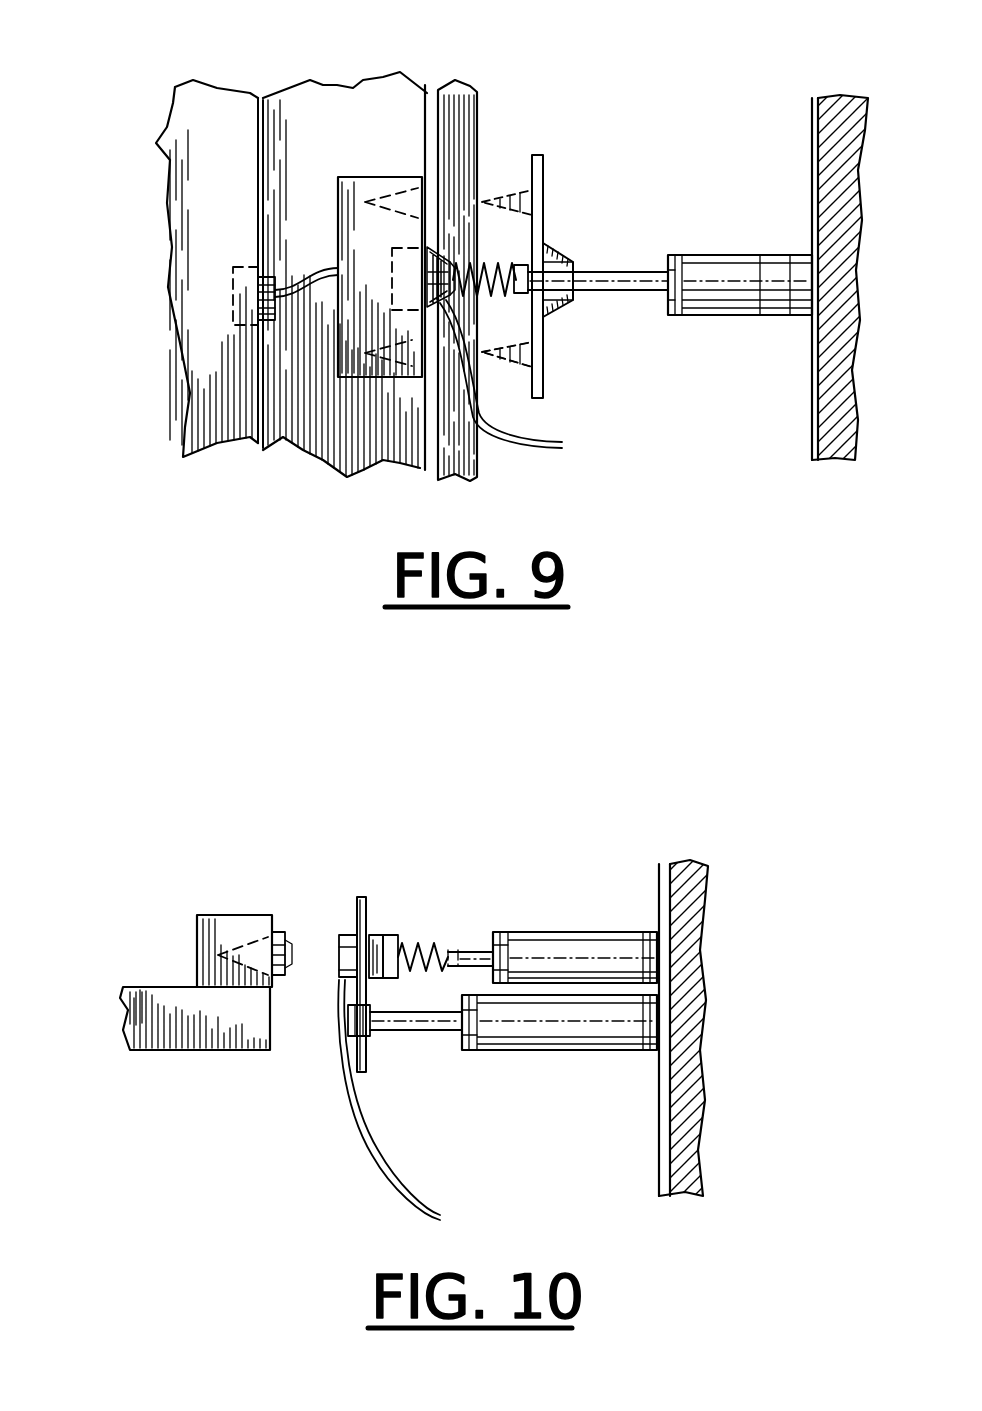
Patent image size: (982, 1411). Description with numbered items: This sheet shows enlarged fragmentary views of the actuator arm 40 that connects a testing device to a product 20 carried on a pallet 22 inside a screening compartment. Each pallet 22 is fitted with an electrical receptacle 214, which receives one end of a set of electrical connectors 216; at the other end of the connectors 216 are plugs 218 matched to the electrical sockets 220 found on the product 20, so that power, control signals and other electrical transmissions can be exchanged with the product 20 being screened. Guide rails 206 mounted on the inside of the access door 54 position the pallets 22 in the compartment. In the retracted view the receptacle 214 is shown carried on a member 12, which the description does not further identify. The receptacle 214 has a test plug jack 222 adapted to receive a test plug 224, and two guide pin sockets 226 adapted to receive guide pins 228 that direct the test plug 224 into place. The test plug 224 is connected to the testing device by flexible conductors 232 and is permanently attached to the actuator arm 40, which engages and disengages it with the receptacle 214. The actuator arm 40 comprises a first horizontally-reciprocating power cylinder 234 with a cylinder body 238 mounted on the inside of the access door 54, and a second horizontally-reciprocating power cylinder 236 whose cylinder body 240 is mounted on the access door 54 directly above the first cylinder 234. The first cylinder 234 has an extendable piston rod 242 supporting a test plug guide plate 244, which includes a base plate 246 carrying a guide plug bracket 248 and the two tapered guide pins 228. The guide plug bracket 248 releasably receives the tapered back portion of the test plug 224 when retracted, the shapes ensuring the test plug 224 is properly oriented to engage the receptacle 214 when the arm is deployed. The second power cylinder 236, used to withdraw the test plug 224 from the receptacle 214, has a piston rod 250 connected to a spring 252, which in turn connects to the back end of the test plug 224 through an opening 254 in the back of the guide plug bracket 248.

In FIG. 10, the door 12 is at (157, 987).
In FIG. 9, the product 20 is at (175, 88).
In FIG. 9, the pallet 22 is at (333, 80).
In FIG. 9, the actuator arm 40 is at (783, 232).
In FIG. 10, the actuator arm 40 is at (520, 896).
In FIG. 9, the access door 54 is at (812, 125).
In FIG. 10, the access door 54 is at (656, 876).
In FIG. 9, the guide rail 206 is at (415, 185).
In FIG. 9, the electrical receptacle 214 is at (365, 177).
In FIG. 10, the electrical receptacle 214 is at (208, 915).
In FIG. 9, the electrical connector 216 is at (312, 272).
In FIG. 9, the plug 218 is at (266, 276).
In FIG. 9, the electrical socket 220 is at (236, 270).
In FIG. 9, the test plug jack 222 is at (430, 248).
In FIG. 10, the test plug jack 222 is at (288, 972).
In FIG. 9, the test plug 224 is at (452, 268).
In FIG. 10, the test plug 224 is at (337, 924).
In FIG. 9, the guide pin socket 226 is at (432, 255).
In FIG. 10, the guide pin socket 226 is at (282, 935).
In FIG. 9, the guide pin 228 is at (517, 368).
In FIG. 9, the flexible conductor 232 is at (535, 450).
In FIG. 10, the flexible conductor 232 is at (338, 1118).
In FIG. 10, the first horizontally-reciprocating power cylinder 234 is at (512, 1065).
In FIG. 9, the second horizontally-reciprocating power cylinder 236 is at (688, 250).
In FIG. 10, the second horizontally-reciprocating power cylinder 236 is at (541, 916).
In FIG. 10, the cylinder body 238 is at (632, 1050).
In FIG. 9, the cylinder body 240 is at (757, 255).
In FIG. 10, the cylinder body 240 is at (639, 931).
In FIG. 10, the extendable piston rod 242 is at (417, 1033).
In FIG. 9, the test plug guide plate 244 is at (560, 350).
In FIG. 10, the test plug guide plate 244 is at (363, 890).
In FIG. 9, the base plate 246 is at (543, 377).
In FIG. 10, the base plate 246 is at (366, 1066).
In FIG. 9, the guide plug bracket 248 is at (558, 316).
In FIG. 10, the guide plug bracket 248 is at (380, 933).
In FIG. 9, the piston rod 250 is at (640, 293).
In FIG. 10, the piston rod 250 is at (482, 950).
In FIG. 9, the spring 252 is at (500, 262).
In FIG. 9, the opening 254 is at (570, 304).
In FIG. 10, the opening 254 is at (404, 933).